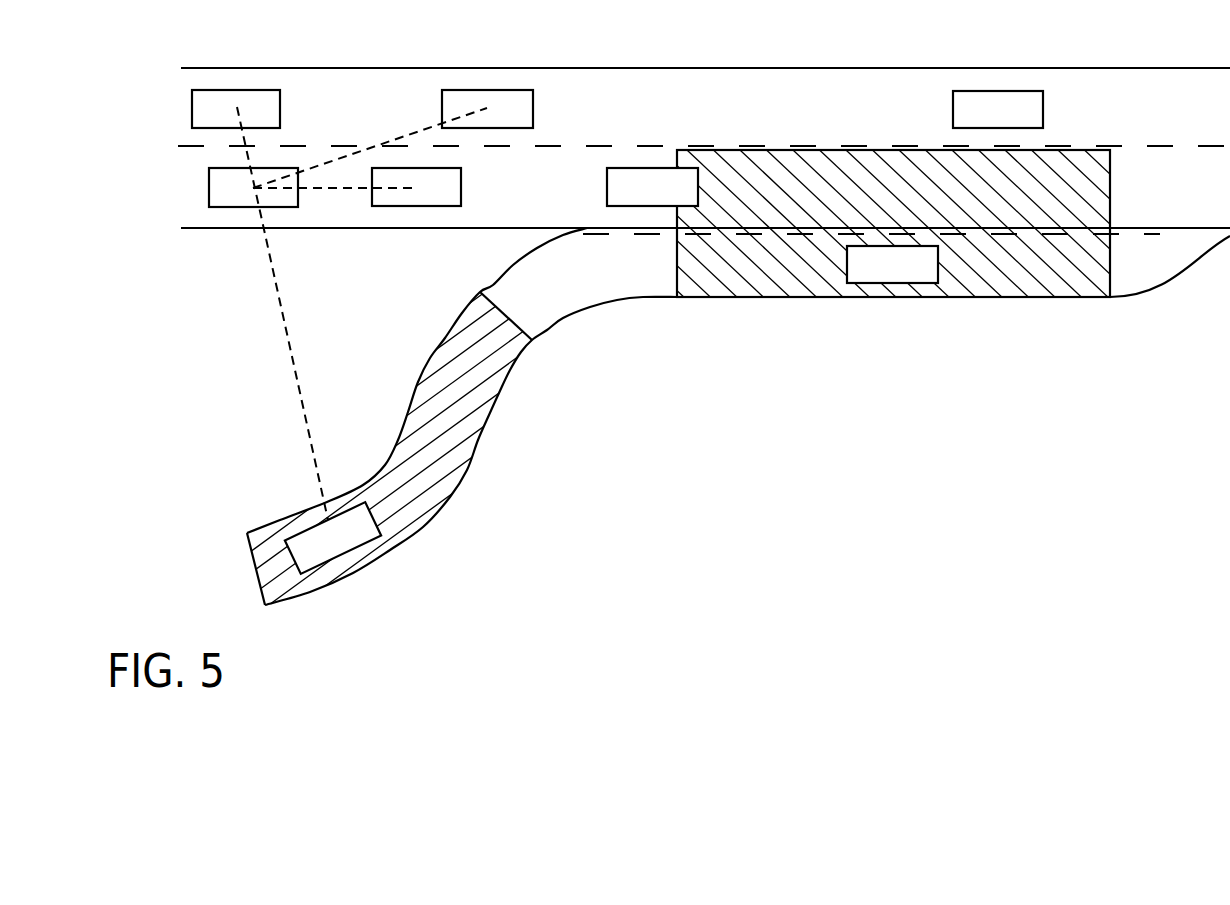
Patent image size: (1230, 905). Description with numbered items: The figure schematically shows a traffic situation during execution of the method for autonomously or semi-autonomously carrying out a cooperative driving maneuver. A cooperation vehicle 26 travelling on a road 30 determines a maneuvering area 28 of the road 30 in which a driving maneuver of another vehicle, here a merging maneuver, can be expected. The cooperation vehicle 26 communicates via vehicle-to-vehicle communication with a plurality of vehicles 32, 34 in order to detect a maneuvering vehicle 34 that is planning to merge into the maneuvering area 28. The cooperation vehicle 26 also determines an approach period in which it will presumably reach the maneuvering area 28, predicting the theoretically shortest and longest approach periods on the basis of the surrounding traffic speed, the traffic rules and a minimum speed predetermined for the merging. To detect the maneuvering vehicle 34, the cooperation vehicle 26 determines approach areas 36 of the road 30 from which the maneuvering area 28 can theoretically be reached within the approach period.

The cooperation vehicle 26 is at (242, 197).
The maneuvering area 28 is at (1027, 281).
The road 30 is at (1117, 81).
The vehicles 32 is at (243, 89).
The maneuvering vehicle 34 is at (343, 546).
The approach areas 36 is at (457, 453).